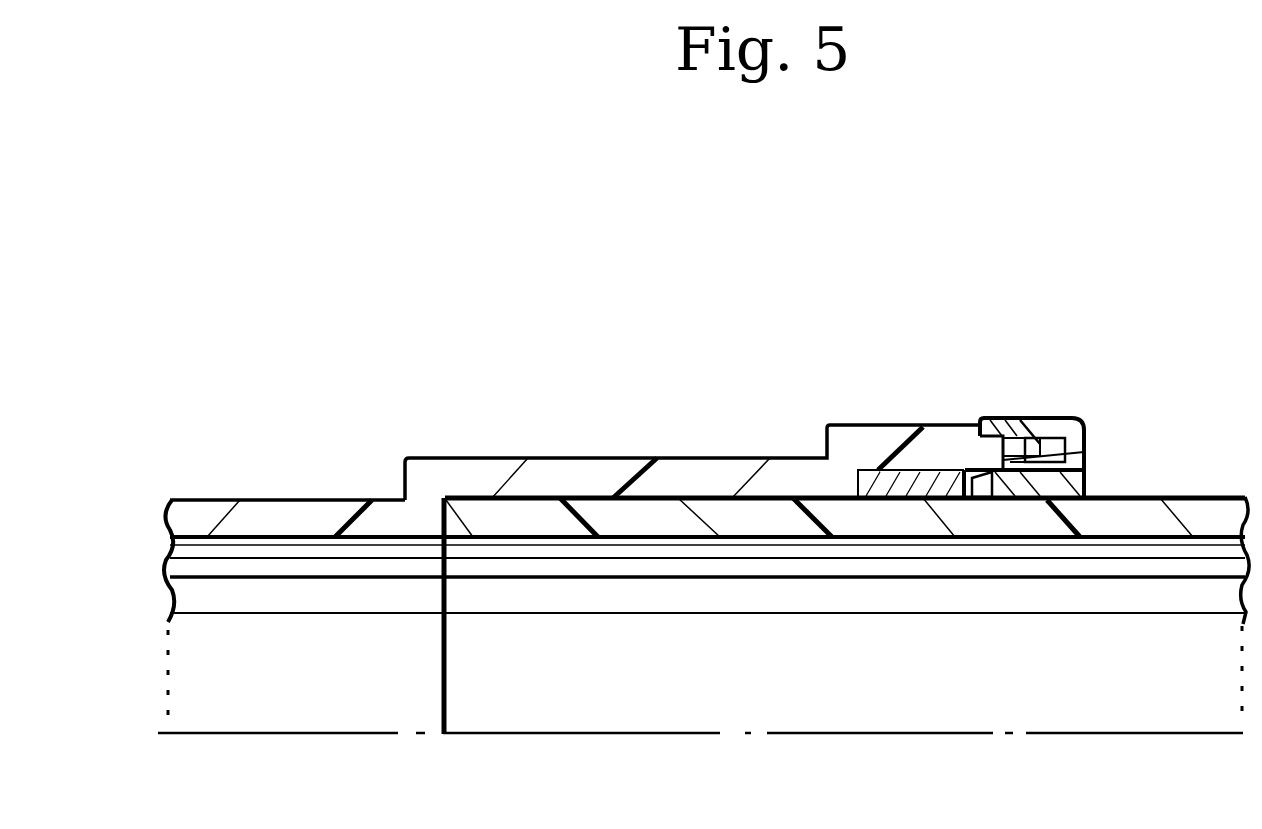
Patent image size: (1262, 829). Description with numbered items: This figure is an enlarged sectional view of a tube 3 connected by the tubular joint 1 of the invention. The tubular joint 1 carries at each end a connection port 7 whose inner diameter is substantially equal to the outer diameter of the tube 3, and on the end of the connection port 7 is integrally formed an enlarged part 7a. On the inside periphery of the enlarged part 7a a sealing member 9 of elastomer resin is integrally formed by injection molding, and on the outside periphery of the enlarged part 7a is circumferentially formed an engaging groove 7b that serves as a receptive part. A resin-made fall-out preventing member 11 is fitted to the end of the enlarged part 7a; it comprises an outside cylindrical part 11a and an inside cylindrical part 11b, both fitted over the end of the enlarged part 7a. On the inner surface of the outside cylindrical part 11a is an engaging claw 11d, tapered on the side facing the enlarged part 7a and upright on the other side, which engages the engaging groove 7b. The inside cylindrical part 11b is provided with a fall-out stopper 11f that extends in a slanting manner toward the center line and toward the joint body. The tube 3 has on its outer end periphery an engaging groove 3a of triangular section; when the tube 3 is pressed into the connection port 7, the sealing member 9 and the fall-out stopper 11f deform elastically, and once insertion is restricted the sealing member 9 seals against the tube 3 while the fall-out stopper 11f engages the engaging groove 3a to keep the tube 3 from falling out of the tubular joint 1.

The tubular joint 1 is at (350, 366).
The tube 3 is at (1222, 497).
The engaging groove 3a is at (972, 490).
The connection port 7 is at (279, 520).
The enlarged part 7a is at (553, 483).
The engaging groove 7b is at (1020, 438).
The sealing member 9 is at (870, 476).
The resin-made fall-out preventing member 11 is at (1085, 422).
The outside cylindrical part 11a is at (1050, 420).
The inside cylindrical part 11b is at (1058, 490).
The engaging claw 11d is at (1015, 460).
The fall-out stopper 11f is at (990, 482).